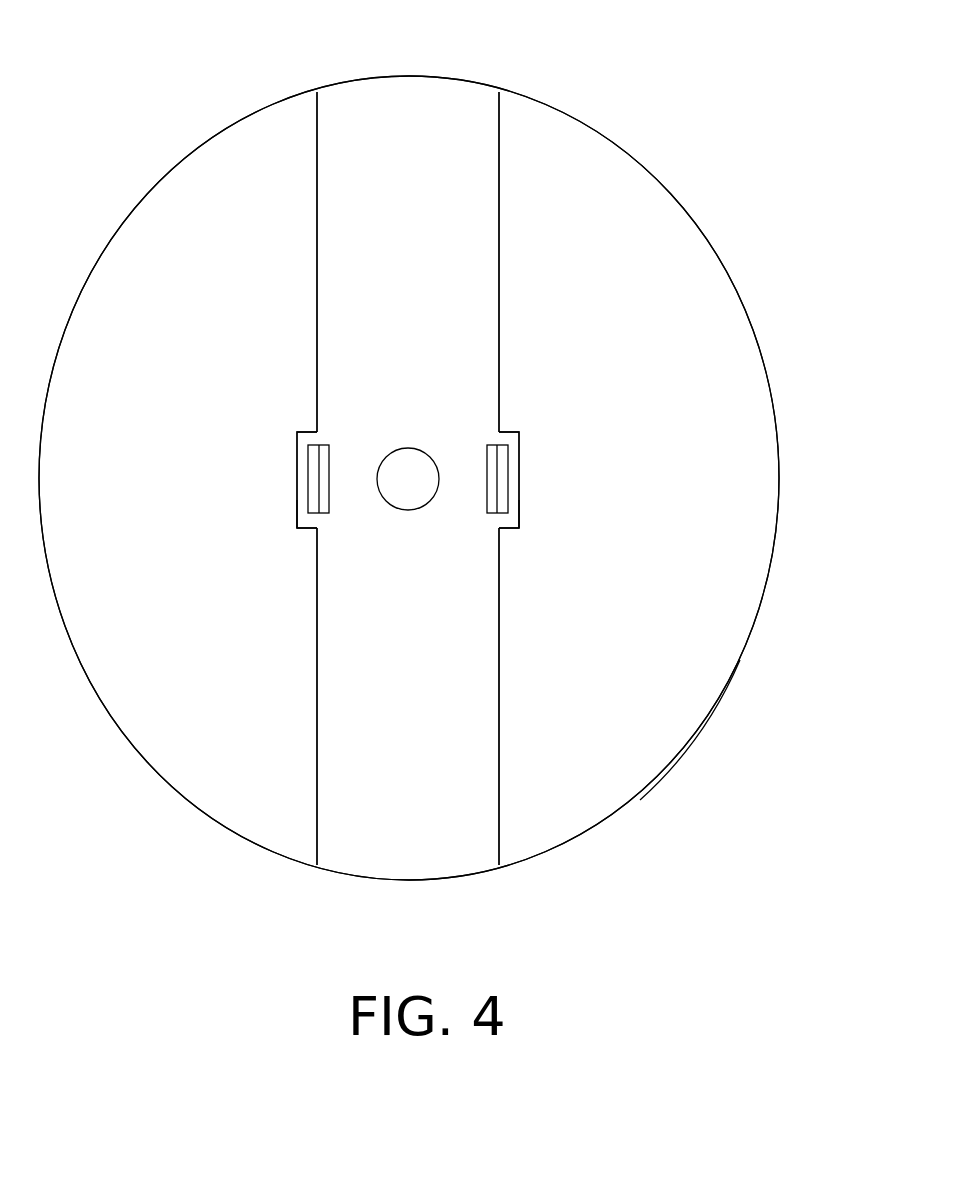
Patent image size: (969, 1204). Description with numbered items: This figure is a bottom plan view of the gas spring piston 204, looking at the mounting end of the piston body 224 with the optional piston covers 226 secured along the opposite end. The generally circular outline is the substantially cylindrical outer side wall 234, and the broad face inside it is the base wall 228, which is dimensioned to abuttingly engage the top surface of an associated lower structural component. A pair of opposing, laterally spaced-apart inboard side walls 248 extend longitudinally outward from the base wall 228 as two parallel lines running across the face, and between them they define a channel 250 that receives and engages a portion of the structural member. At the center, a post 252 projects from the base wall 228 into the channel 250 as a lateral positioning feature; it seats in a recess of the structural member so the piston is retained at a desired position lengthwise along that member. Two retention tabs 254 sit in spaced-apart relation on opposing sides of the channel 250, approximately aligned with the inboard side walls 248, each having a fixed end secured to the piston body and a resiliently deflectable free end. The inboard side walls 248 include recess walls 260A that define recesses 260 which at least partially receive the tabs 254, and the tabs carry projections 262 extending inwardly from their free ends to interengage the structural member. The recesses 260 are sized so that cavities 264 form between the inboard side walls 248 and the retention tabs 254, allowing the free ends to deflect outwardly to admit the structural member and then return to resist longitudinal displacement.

The gas spring piston 204 is at (688, 155).
The piston body 224 is at (362, 833).
The piston covers 226 is at (675, 337).
The base wall 228 is at (437, 827).
The outer side wall 234 is at (683, 745).
The inboard side walls 248 is at (317, 262).
The channel 250 is at (432, 167).
The post 252 is at (408, 447).
The retention tabs 254 is at (333, 440).
The recesses 260 is at (303, 437).
The recess walls 260A is at (296, 517).
The projections 262 is at (331, 492).
The cavities 264 is at (302, 477).